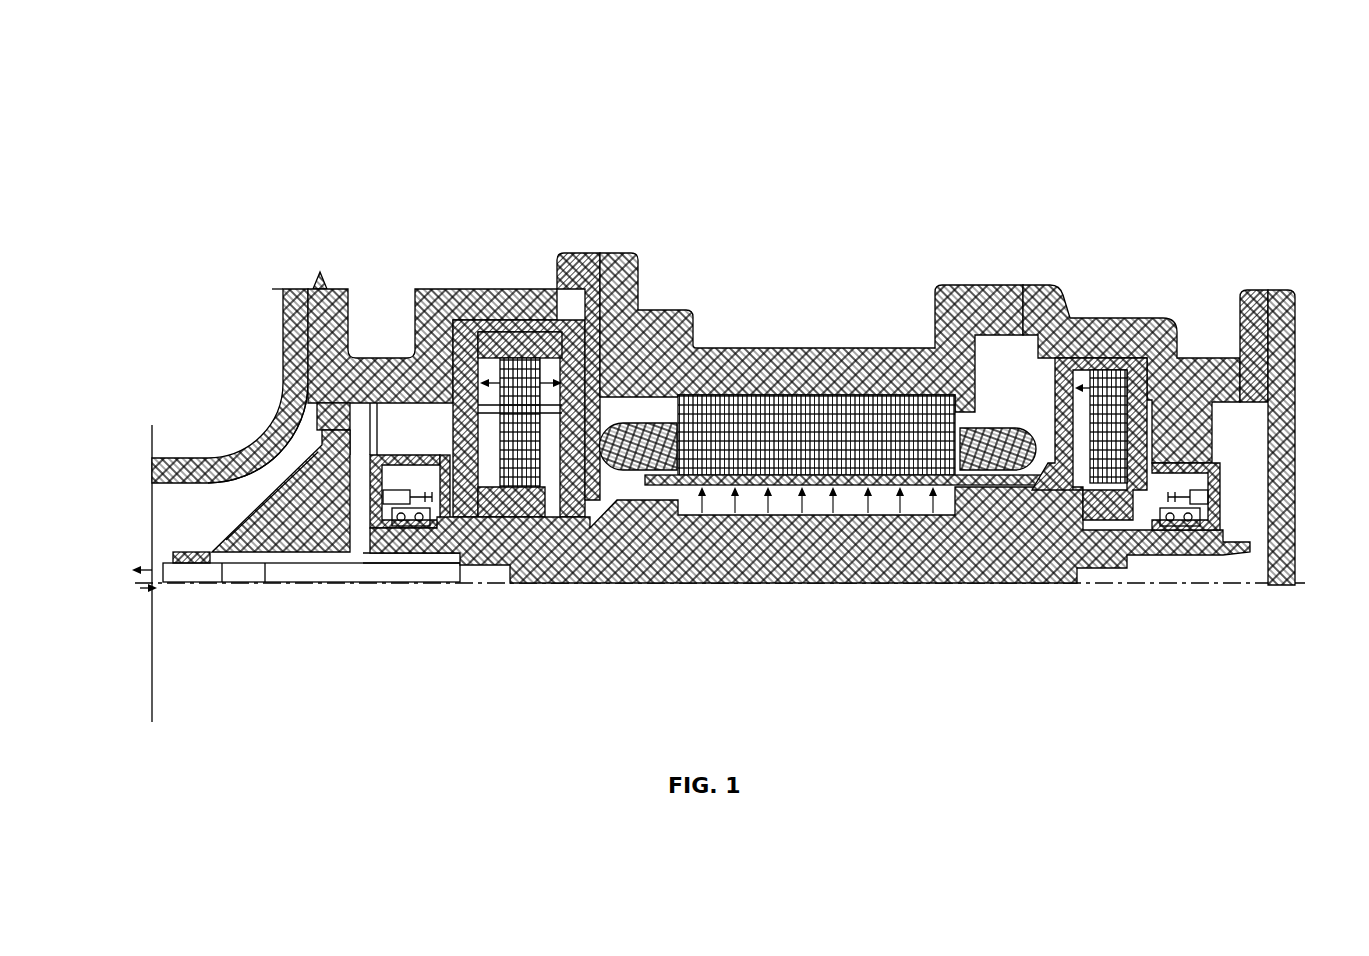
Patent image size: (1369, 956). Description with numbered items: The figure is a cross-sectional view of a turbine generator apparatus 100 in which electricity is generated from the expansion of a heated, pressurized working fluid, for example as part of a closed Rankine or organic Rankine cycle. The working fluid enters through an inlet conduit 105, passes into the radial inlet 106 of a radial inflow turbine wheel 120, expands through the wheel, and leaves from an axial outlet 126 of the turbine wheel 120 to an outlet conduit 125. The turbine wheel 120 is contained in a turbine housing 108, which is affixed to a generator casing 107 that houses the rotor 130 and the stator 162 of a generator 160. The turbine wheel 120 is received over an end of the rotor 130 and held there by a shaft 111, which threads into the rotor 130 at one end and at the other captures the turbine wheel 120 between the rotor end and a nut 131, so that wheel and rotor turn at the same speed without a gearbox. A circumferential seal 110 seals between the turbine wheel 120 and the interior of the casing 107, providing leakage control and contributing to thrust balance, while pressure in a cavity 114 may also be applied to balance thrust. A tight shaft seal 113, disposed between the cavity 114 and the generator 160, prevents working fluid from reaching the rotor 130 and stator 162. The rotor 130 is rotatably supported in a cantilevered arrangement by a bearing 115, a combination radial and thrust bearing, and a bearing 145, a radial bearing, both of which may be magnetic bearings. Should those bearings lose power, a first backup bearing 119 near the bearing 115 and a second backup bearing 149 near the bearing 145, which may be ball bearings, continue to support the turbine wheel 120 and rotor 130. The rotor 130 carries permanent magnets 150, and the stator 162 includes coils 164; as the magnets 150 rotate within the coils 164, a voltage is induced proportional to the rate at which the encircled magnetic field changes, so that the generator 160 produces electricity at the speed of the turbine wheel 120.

The turbine generator apparatus 100 is at (238, 116).
The inlet conduit 105 is at (310, 284).
The radial inlet 106 is at (290, 375).
The generator casing 107 is at (856, 348).
The turbine housing 108 is at (285, 328).
The circumferential seal 110 is at (345, 498).
The shaft 111 is at (330, 573).
The shaft seal 113 is at (370, 550).
The cavity 114 is at (300, 560).
The bearing 115 is at (520, 340).
The first backup bearing 119 is at (407, 532).
The turbine wheel 120 is at (245, 496).
The outlet conduit 125 is at (152, 512).
The axial outlet 126 is at (208, 505).
The rotor 130 is at (797, 575).
The nut 131 is at (173, 558).
The bearing 145 is at (1110, 373).
The second backup bearing 149 is at (1180, 530).
The permanent magnets 150 is at (917, 508).
The generator 160 is at (765, 272).
The stator 162 is at (842, 403).
The coils 164 is at (1007, 430).